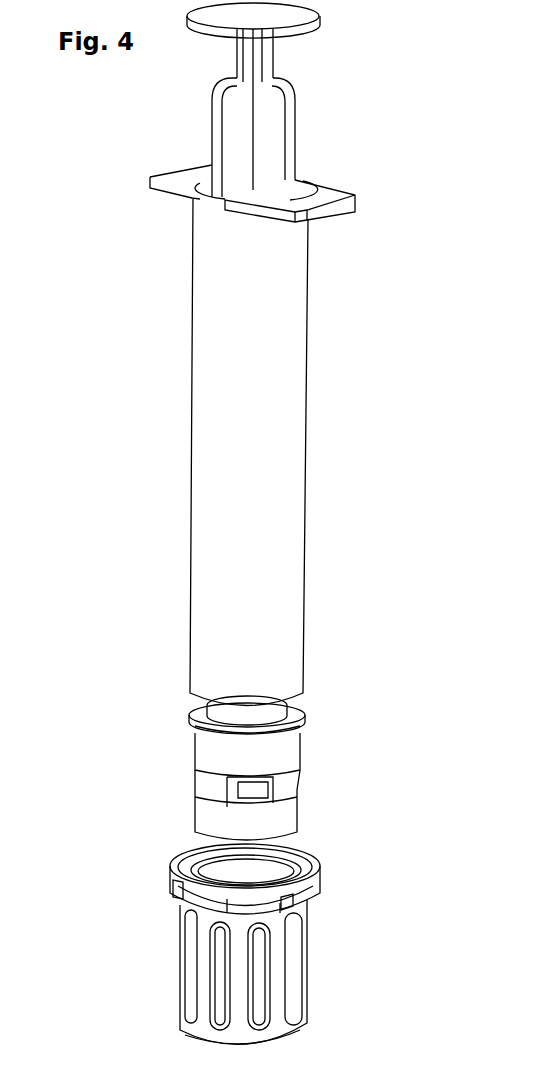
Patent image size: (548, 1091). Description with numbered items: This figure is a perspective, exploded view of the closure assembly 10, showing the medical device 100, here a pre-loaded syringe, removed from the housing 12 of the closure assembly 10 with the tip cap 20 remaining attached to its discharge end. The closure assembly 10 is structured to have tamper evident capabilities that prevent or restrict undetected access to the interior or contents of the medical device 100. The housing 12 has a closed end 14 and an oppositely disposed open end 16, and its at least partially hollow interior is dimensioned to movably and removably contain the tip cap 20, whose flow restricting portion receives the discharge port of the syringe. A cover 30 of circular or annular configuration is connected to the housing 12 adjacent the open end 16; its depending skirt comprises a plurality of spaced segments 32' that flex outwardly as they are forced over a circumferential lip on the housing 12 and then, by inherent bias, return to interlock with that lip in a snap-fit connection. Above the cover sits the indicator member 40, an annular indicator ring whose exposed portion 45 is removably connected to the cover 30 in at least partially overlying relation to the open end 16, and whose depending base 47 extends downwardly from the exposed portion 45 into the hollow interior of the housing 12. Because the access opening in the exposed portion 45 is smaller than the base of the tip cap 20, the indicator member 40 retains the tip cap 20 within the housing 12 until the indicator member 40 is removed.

The medical device 100 is at (307, 295).
The indicator member 40 is at (255, 768).
The exposed portion 45 is at (300, 712).
The depending base 47 is at (195, 751).
The tip cap 20 is at (310, 816).
The closure assembly 10 is at (224, 951).
The cover 30 is at (307, 878).
The open end 16 is at (290, 871).
The segments 32' is at (136, 888).
The housing 12 is at (182, 978).
The closed end 14 is at (273, 1042).